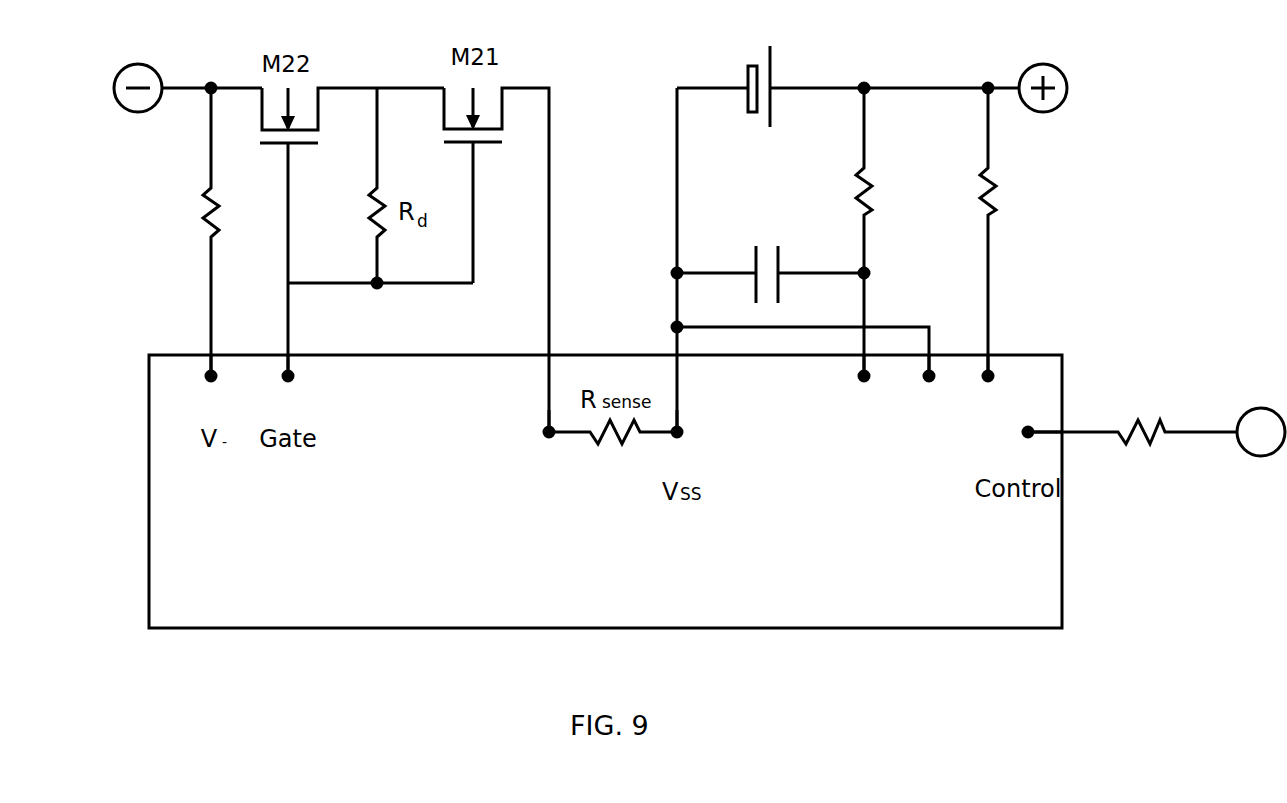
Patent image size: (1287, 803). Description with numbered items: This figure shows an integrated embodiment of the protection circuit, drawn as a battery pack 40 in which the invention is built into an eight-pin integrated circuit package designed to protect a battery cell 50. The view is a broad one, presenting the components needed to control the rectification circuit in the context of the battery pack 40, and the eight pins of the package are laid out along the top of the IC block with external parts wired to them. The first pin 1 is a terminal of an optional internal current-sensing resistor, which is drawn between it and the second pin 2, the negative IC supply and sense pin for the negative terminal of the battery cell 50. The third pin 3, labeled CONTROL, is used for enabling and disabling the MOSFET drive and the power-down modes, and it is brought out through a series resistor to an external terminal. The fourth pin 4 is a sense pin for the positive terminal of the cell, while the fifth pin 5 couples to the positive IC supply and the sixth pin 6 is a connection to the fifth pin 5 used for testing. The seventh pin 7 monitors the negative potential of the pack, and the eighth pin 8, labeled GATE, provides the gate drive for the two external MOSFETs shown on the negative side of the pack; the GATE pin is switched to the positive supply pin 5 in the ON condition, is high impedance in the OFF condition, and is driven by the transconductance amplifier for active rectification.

The battery cell 50 is at (776, 27).
The battery pack 40 is at (1078, 17).
The first pin 1 is at (549, 444).
The second pin 2 is at (677, 444).
The third pin 3 is at (1041, 450).
The fourth pin 4 is at (987, 388).
The fifth pin 5 is at (863, 388).
The sixth pin 6 is at (929, 388).
The seventh pin 7 is at (210, 387).
The eighth pin 8 is at (288, 387).